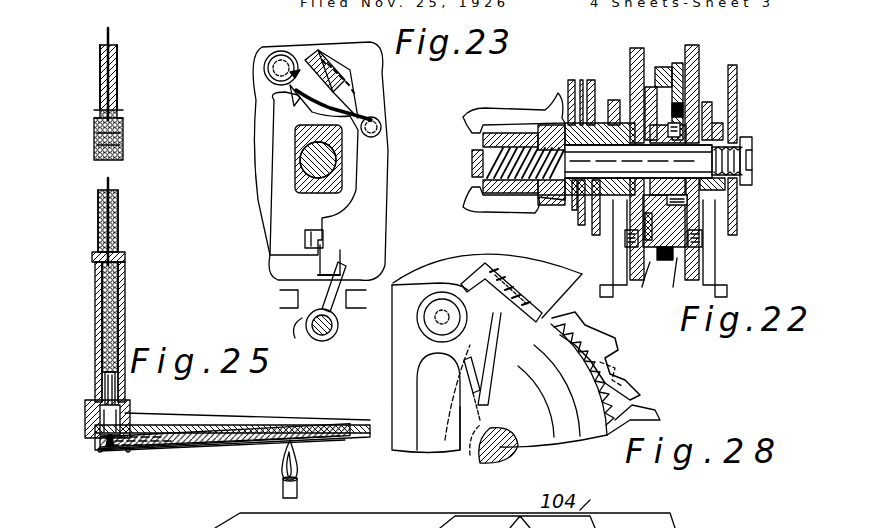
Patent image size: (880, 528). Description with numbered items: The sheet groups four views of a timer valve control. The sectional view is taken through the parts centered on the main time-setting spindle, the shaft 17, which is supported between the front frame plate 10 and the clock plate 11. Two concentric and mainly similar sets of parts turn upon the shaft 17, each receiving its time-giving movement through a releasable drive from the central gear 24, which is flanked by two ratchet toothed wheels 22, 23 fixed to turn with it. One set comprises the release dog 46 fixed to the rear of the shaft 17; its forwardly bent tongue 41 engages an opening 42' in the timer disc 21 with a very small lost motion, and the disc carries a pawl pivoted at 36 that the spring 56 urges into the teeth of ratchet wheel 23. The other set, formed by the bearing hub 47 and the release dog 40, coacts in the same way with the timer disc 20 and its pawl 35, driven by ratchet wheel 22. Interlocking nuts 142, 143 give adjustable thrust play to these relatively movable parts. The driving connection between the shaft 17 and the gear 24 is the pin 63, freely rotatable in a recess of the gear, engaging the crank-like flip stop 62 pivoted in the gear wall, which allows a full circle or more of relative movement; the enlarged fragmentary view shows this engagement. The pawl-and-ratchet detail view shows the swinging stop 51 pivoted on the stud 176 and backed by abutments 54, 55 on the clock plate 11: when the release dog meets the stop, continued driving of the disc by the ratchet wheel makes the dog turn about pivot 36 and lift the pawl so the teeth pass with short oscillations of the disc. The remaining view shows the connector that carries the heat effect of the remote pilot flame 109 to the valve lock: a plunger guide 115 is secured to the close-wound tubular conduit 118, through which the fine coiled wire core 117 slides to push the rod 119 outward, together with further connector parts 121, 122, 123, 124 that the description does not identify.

In FIG. 22, the front frame plate 10 is at (590, 80).
In FIG. 22, the clock plate 11 is at (737, 80).
In FIG. 23, the shaft 17 is at (336, 160).
In FIG. 23, the timer disc 20 is at (385, 218).
In FIG. 22, the timer disc 20 is at (638, 48).
In FIG. 28, the timer disc 20 is at (487, 286).
In FIG. 22, the timer disc 21 is at (692, 45).
In FIG. 23, the ratchet toothed wheel 22 is at (345, 68).
In FIG. 22, the ratchet toothed wheel 22 is at (649, 283).
In FIG. 28, the ratchet toothed wheel 22 is at (601, 356).
In FIG. 22, the ratchet toothed wheel 23 is at (682, 281).
In FIG. 28, the ratchet toothed wheel 23 is at (647, 377).
In FIG. 28, the central gear 24 is at (655, 412).
In FIG. 23, the pawl 35 is at (320, 50).
In FIG. 28, the pawl 35 is at (501, 292).
In FIG. 23, the pivot 36 is at (281, 51).
In FIG. 28, the pivot 36 is at (442, 317).
In FIG. 23, the release dog 40 is at (300, 218).
In FIG. 22, the release dog 40 is at (612, 225).
In FIG. 28, the release dog 40 is at (425, 380).
In FIG. 22, the forwardly bent tongue 41 is at (700, 240).
In FIG. 22, the opening 42' is at (716, 227).
In FIG. 22, the release dog 46 is at (712, 275).
In FIG. 22, the bearing hub 47 is at (612, 203).
In FIG. 23, the swinging stop 51 is at (318, 343).
In FIG. 23, the abutment 54 is at (268, 302).
In FIG. 23, the abutment 55 is at (370, 296).
In FIG. 23, the spring 56 is at (372, 96).
In FIG. 22, the flip stop 62 is at (670, 87).
In FIG. 28, the flip stop 62 is at (520, 380).
In FIG. 22, the pin 63 is at (680, 126).
In FIG. 25, the pilot flame 109 is at (298, 485).
In FIG. 25, the plunger guide 115 is at (118, 80).
In FIG. 25, the coiled wire core 117 is at (110, 180).
In FIG. 25, the tubular conduit 118 is at (118, 213).
In FIG. 25, the rod 119 is at (110, 32).
In FIG. 25, the tip 121 is at (128, 450).
In FIG. 25, the arm 122 is at (205, 413).
In FIG. 25, the point 123 is at (98, 452).
In FIG. 25, the column 124 is at (125, 295).
In FIG. 22, the interlocking nut 142 is at (530, 195).
In FIG. 22, the interlocking nut 143 is at (530, 88).
In FIG. 23, the stud 176 is at (294, 323).